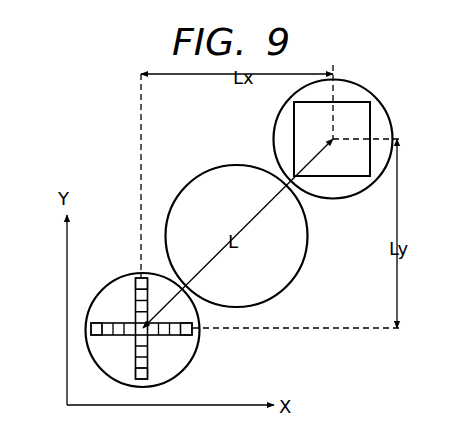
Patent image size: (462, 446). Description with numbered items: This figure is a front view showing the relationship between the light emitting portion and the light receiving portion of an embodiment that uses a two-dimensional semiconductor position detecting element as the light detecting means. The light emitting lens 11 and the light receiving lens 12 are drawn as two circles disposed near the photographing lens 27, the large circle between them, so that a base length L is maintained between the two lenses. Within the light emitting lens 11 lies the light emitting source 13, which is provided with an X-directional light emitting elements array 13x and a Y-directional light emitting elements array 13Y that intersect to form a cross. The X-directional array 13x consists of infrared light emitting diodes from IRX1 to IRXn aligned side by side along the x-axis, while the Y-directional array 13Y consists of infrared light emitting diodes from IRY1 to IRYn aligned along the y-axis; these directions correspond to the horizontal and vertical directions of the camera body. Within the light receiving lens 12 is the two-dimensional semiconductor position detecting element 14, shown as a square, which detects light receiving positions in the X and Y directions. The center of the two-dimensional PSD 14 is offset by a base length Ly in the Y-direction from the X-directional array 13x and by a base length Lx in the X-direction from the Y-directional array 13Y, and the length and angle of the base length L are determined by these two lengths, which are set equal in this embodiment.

The light emitting lens 11 is at (193, 356).
The light receiving lens 12 is at (359, 87).
The light emitting source 13 is at (138, 277).
The X-directional light emitting elements array 13x is at (138, 312).
The Y-directional light emitting elements array 13Y is at (168, 277).
The two-dimensional semiconductor position detecting element 14 is at (371, 118).
The photographing lens 27 is at (308, 251).
The infrared light emitting diode IRX1 is at (91, 331).
The infrared light emitting diode IRXn is at (192, 331).
The infrared light emitting diode IRY1 is at (148, 279).
The infrared light emitting diode IRYn is at (148, 375).